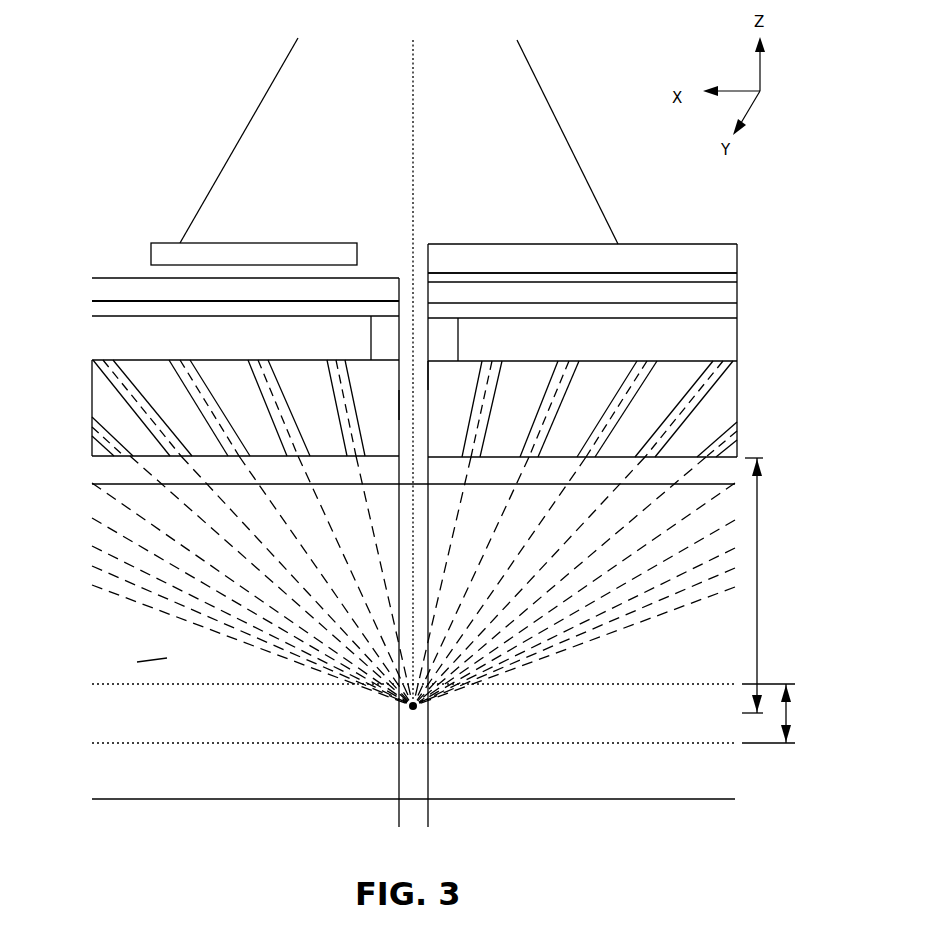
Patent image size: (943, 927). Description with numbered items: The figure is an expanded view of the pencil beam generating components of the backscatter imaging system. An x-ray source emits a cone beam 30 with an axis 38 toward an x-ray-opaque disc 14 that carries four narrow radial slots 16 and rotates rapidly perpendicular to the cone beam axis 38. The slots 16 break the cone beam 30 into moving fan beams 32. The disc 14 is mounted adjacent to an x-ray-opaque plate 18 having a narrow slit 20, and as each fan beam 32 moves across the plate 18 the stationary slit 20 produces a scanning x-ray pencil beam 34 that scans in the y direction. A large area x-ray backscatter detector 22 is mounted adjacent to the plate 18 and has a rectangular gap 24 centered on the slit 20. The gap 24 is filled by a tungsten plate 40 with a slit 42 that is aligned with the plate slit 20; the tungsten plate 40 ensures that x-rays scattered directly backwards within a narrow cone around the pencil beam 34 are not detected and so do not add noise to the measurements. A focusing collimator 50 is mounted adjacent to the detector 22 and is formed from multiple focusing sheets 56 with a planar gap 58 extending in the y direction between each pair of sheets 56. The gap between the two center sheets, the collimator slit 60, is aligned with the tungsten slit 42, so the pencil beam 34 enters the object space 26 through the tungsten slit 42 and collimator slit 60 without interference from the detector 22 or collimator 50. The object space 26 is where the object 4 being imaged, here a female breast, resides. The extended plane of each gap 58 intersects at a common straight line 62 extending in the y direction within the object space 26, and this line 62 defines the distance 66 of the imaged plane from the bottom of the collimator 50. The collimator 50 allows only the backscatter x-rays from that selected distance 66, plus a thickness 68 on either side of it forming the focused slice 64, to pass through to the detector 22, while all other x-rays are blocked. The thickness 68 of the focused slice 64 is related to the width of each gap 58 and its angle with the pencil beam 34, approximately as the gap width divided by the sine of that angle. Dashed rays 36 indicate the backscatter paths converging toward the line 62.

The object being imaged 4 is at (152, 648).
The x-ray-opaque disc 14 is at (728, 261).
The radial slots 16 is at (358, 250).
The x-ray-opaque plate 18 is at (728, 296).
The slit 20 is at (428, 284).
The x-ray backscatter detector 22 is at (728, 343).
The rectangular gap 24 is at (450, 345).
The object space 26 is at (66, 571).
The cone beam 30 is at (549, 106).
The fan beams 32 is at (358, 274).
The pencil beam 34 is at (428, 775).
The beam paths 36 is at (610, 637).
The cone beam axis 38 is at (415, 128).
The tungsten plate 40 is at (371, 347).
The tungsten slit 42 is at (428, 366).
The focusing collimator 50 is at (435, 364).
The focusing sheets 56 is at (143, 359).
The planar gap 58 is at (175, 357).
The collimator slit 60 is at (428, 411).
The common straight line 62 is at (416, 708).
The focused slice 64 is at (100, 715).
The distance of imaged plane 66 is at (757, 565).
The thickness 68 is at (786, 713).